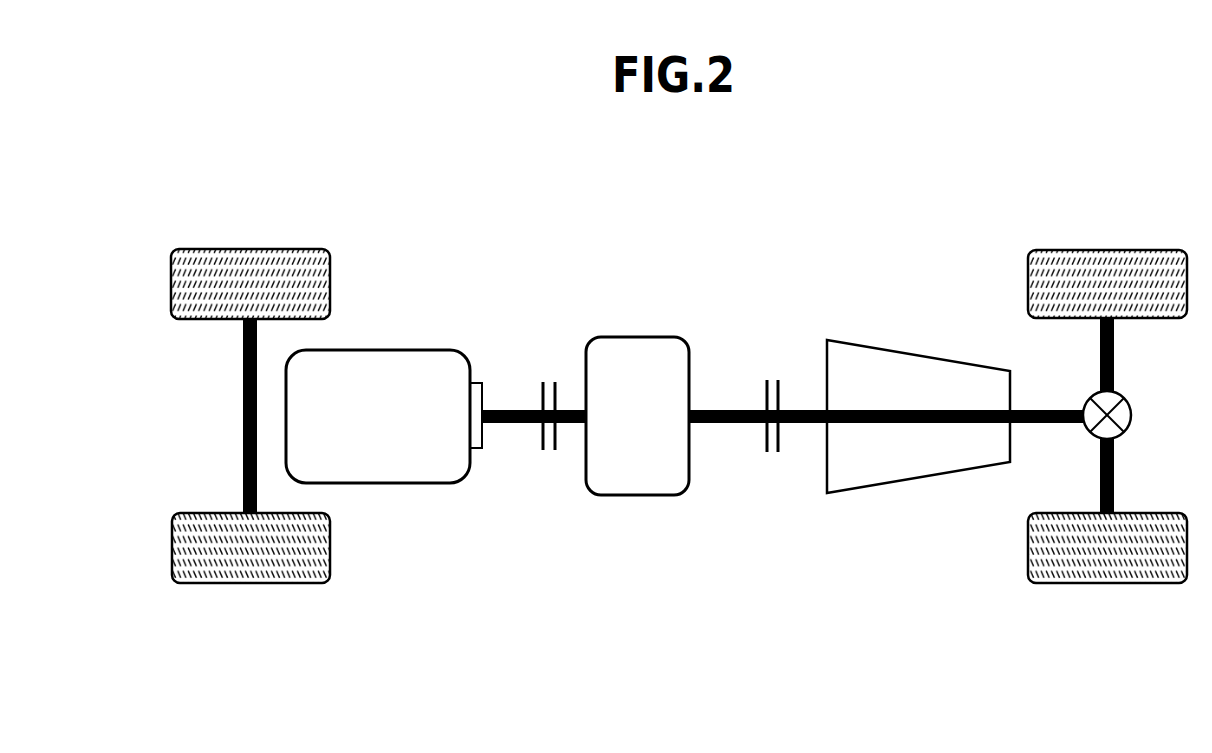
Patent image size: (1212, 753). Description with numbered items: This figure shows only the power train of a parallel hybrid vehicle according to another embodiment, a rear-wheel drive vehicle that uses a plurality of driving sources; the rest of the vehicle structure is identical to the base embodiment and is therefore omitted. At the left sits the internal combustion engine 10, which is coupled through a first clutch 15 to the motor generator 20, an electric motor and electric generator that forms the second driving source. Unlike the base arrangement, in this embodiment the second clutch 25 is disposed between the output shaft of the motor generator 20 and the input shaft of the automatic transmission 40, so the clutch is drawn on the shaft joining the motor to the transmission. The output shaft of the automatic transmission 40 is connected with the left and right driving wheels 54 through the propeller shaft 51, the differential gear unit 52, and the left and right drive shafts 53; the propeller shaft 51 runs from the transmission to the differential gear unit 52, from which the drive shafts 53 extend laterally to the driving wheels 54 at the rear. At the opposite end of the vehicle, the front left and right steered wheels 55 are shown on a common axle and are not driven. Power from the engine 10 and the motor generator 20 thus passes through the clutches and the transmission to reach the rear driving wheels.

The engine 10 is at (378, 350).
The first clutch 15 is at (541, 395).
The motor generator 20 is at (620, 337).
The second clutch 25 is at (765, 395).
The automatic transmission 40 is at (916, 355).
The propeller shaft 51 is at (1050, 408).
The differential gear unit 52 is at (1132, 416).
The drive shafts 53 is at (1115, 354).
The driving wheels 54 is at (1137, 250).
The steered wheels 55 is at (204, 249).